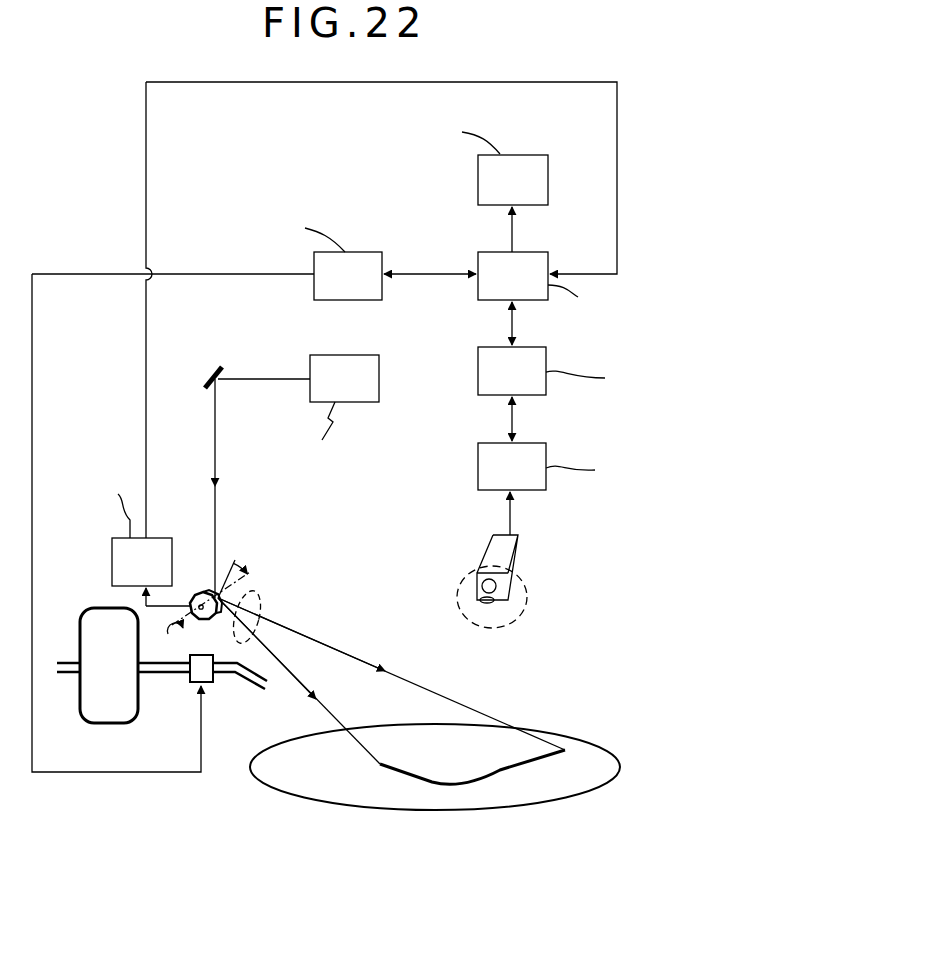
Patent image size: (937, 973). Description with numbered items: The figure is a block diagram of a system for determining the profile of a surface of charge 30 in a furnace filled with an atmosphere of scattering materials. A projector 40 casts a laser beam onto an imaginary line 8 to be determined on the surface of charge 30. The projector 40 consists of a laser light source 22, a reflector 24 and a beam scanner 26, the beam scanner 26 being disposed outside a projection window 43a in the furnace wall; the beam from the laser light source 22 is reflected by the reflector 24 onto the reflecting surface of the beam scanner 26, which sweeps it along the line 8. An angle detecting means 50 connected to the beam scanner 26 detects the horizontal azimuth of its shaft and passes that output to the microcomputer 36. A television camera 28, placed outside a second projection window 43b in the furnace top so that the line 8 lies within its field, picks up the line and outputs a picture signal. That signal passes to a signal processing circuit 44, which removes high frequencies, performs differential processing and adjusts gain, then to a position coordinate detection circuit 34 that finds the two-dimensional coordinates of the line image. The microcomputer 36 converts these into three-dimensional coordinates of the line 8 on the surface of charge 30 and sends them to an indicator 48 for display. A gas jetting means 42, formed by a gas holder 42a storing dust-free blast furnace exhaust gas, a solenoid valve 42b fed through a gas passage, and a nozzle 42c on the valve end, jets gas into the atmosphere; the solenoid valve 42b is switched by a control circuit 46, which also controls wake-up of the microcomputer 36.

The line to be determined 8 is at (497, 770).
The laser light source 22 is at (361, 402).
The reflector 24 is at (212, 370).
The beam scanner 26 is at (366, 677).
The television camera 28 is at (520, 546).
The surface of charge 30 is at (467, 812).
The position coordinate detection circuit 34 is at (546, 395).
The microcomputer 36 is at (540, 300).
The projector 40 is at (254, 497).
The gas jetting means 42 is at (177, 692).
The gas holder 42a is at (100, 723).
The solenoid valve 42b is at (218, 682).
The nozzle 42c is at (260, 688).
The projection window 43a is at (259, 600).
The projection window 43b is at (527, 615).
The signal processing circuit 44 is at (546, 490).
The control circuit 46 is at (375, 300).
The indicator 48 is at (515, 154).
The angle detecting means 50 is at (107, 538).